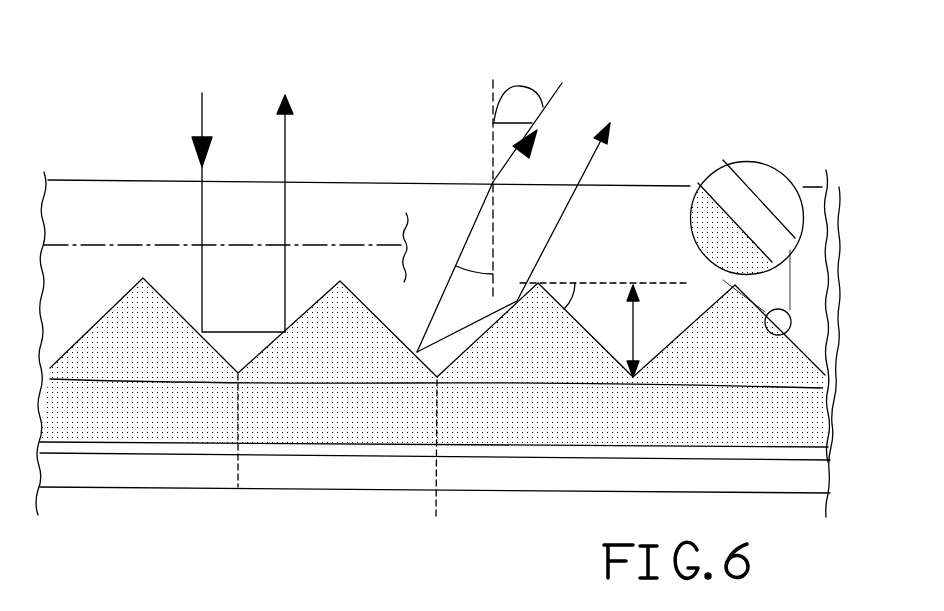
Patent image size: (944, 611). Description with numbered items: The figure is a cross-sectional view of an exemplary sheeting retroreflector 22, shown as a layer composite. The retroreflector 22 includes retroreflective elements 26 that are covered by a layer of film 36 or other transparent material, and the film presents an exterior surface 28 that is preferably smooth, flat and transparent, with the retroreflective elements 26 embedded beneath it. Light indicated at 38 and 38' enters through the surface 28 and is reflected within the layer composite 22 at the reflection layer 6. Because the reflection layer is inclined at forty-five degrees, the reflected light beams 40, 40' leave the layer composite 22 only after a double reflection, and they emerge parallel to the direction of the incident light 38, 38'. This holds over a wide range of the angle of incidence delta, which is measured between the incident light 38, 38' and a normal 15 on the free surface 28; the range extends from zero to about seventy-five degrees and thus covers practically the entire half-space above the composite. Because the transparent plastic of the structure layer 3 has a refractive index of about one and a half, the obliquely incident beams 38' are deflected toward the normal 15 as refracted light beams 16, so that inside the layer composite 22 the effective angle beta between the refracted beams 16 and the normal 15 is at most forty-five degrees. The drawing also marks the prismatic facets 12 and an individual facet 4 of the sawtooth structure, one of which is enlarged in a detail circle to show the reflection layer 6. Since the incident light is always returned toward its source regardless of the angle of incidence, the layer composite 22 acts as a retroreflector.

The layer of film 36 is at (82, 213).
The exterior surface 28 is at (398, 183).
The incident light 38 is at (238, 212).
The reflected light beam 40 is at (305, 213).
The normal 15 is at (492, 150).
The incident light beam 38' is at (493, 132).
The refracted light beam 16 is at (461, 255).
The reflected light beam 40' is at (533, 237).
The prismatic facets 12 is at (402, 352).
The retroreflective elements 26 is at (482, 388).
The prism facet 4 is at (717, 322).
The structure layer 3 is at (750, 174).
The reflection layer 6 is at (734, 208).
The sheeting retroreflector 22 is at (667, 25).